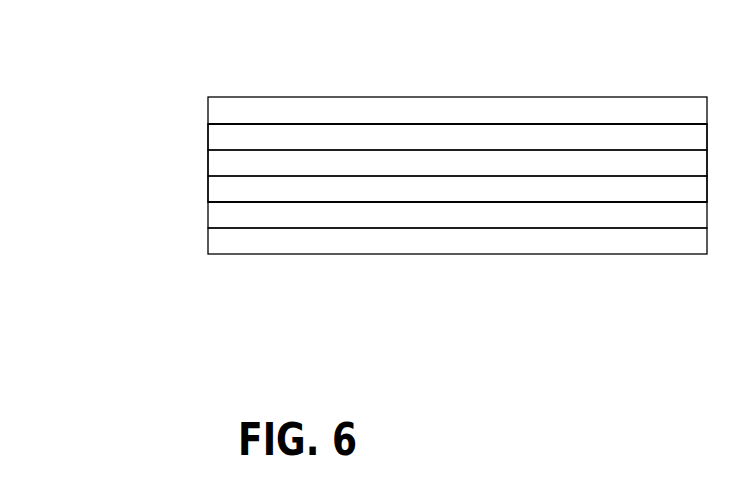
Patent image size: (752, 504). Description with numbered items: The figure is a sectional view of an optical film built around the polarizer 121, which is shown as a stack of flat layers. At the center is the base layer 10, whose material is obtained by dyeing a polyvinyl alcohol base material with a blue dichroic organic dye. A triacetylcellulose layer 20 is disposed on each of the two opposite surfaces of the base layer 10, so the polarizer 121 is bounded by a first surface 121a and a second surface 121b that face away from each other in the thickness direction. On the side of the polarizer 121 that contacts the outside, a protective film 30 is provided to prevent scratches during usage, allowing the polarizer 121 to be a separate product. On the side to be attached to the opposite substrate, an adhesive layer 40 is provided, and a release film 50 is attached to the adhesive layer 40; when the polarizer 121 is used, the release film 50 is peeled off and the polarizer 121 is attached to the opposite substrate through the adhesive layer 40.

The base layer 10 is at (235, 161).
The triacetylcellulose (TAC) layer 20 is at (235, 128).
The protective film 30 is at (235, 100).
The adhesive layer 40 is at (235, 220).
The release film 50 is at (235, 246).
The polarizer 121 is at (112, 122).
The first surface 121a is at (462, 202).
The second surface 121b is at (470, 123).